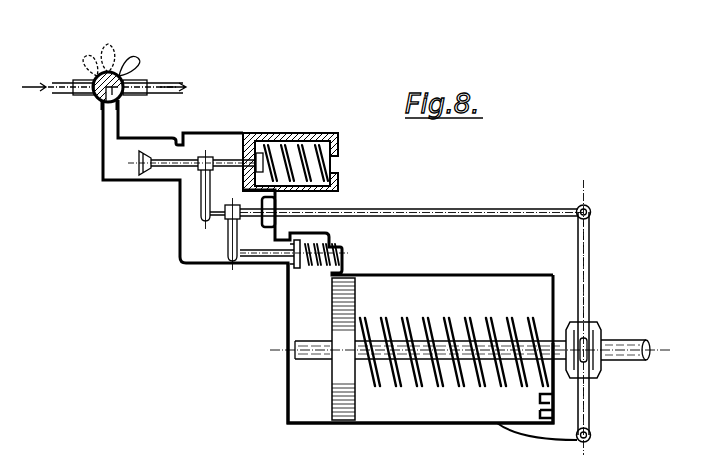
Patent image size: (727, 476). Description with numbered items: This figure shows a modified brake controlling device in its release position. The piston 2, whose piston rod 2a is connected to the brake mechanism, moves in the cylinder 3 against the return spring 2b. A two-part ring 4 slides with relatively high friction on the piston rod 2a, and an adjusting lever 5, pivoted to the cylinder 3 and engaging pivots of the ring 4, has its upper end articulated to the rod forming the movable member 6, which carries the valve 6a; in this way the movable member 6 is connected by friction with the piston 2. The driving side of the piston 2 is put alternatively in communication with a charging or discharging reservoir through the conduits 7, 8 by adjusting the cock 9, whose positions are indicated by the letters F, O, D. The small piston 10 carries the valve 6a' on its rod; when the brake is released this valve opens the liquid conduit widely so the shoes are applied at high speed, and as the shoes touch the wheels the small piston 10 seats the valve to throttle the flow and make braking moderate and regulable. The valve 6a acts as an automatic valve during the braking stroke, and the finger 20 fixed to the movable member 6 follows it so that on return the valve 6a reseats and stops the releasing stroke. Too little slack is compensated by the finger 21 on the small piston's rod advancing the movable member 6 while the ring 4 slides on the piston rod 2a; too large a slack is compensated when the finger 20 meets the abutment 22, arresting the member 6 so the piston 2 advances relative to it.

The fuel petal position F is at (78, 62).
The neutral petal position O is at (108, 45).
The drive petal position D is at (140, 60).
The conduit 7 is at (70, 83).
The conduit 8 is at (138, 83).
The cock 9 is at (97, 100).
The small piston 10 is at (270, 132).
The abutment 22 is at (252, 203).
The valve 6a' is at (174, 178).
The finger 21 is at (203, 200).
The finger 20 is at (226, 241).
The valve 6a is at (295, 277).
The movable member 6 is at (452, 209).
The adjusting lever 5 is at (589, 262).
The ring 4 is at (599, 332).
The piston rod 2a is at (628, 340).
The cylinder 3 is at (313, 416).
The piston 2 is at (341, 420).
The return spring 2b is at (420, 388).